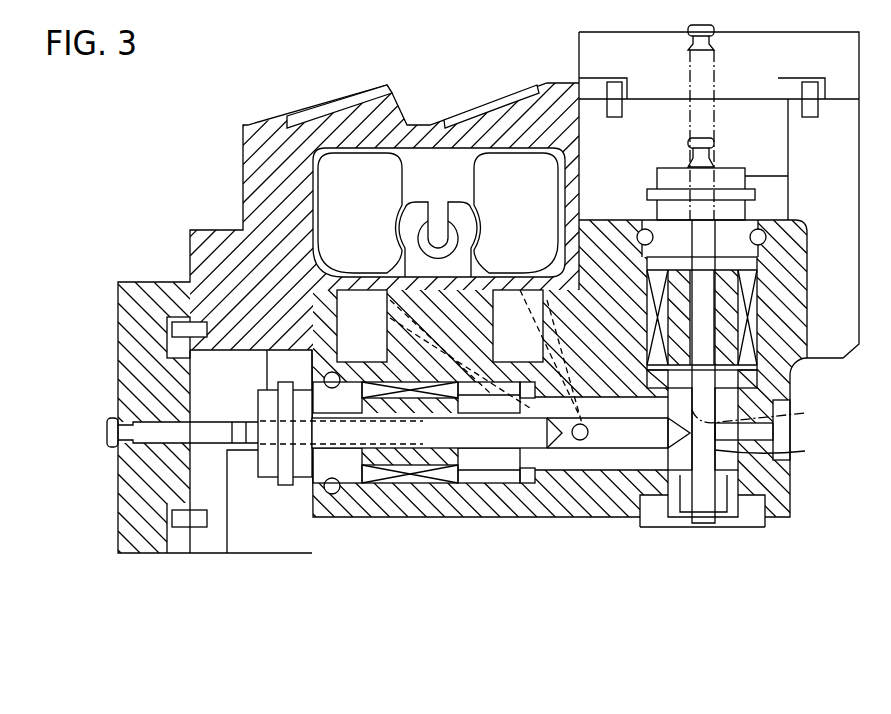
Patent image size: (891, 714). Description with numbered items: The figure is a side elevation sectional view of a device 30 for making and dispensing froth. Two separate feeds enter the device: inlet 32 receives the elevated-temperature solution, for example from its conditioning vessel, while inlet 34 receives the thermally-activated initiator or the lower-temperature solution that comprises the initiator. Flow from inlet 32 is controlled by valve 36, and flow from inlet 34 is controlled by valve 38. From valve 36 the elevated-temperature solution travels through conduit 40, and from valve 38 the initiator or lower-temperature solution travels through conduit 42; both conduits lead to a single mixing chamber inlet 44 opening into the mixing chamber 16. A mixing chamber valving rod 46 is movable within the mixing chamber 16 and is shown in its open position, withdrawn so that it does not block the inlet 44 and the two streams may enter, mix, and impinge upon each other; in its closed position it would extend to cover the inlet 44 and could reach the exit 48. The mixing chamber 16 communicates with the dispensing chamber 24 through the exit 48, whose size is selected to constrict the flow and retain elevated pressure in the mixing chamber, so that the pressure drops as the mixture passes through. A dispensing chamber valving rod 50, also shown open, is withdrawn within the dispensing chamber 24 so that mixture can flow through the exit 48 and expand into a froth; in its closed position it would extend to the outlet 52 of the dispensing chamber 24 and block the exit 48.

The device 30 is at (257, 91).
The inlet 32 is at (330, 102).
The inlet 34 is at (480, 107).
The valve 36 is at (370, 217).
The valve 38 is at (532, 217).
The conduit 40 is at (462, 352).
The conduit 42 is at (562, 357).
The mixing chamber inlet 44 is at (582, 441).
The mixing chamber valving rod 46 is at (490, 452).
The exit 48 is at (668, 433).
The dispensing chamber valving rod 50 is at (762, 414).
The dispensing chamber 24 is at (774, 450).
The mixing chamber 16 is at (616, 450).
The outlet 52 is at (705, 527).